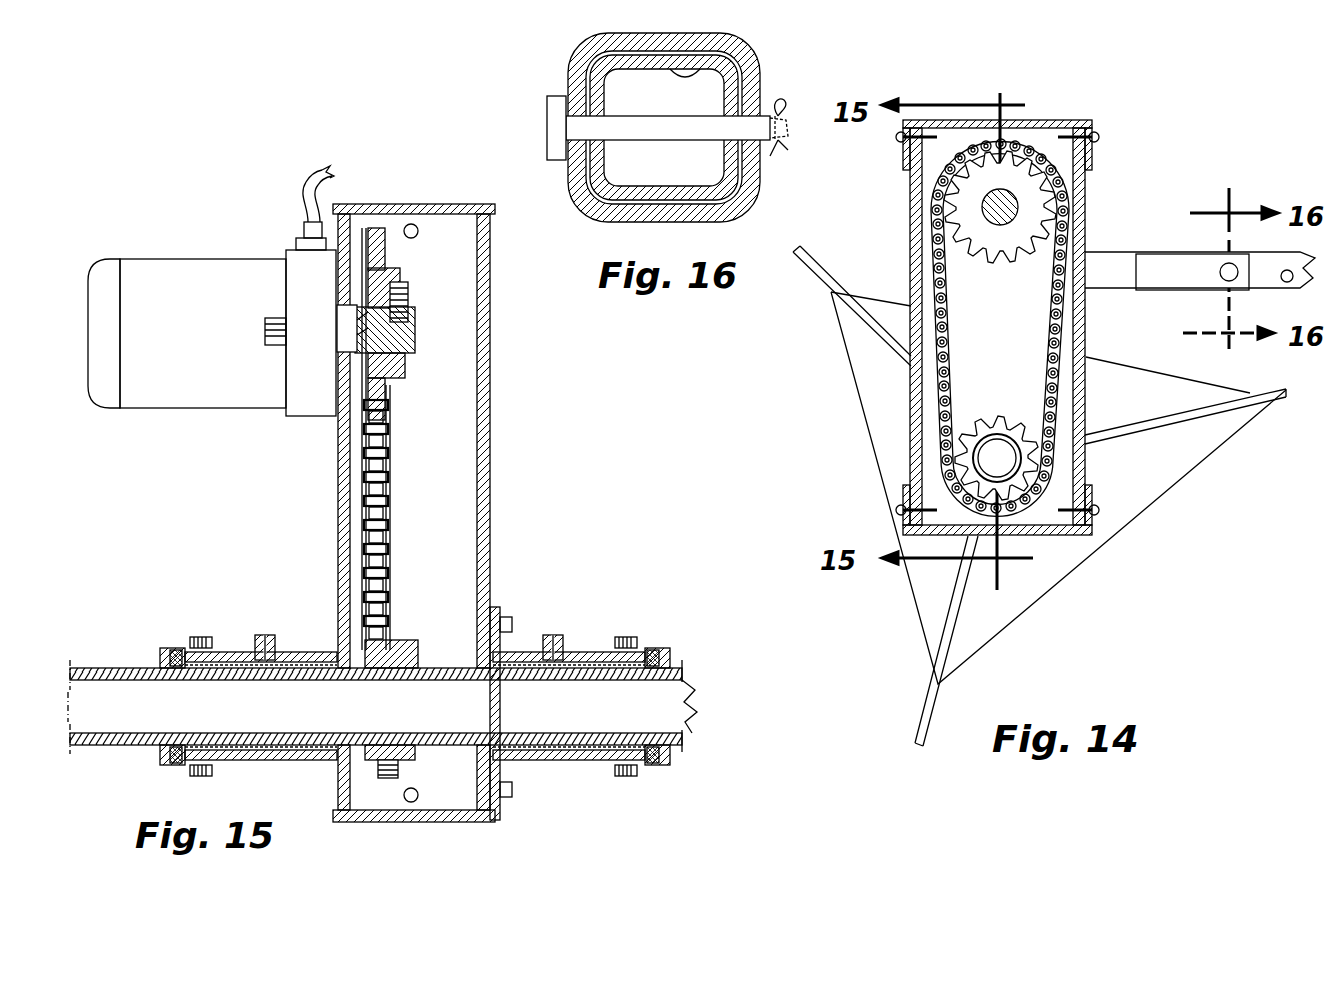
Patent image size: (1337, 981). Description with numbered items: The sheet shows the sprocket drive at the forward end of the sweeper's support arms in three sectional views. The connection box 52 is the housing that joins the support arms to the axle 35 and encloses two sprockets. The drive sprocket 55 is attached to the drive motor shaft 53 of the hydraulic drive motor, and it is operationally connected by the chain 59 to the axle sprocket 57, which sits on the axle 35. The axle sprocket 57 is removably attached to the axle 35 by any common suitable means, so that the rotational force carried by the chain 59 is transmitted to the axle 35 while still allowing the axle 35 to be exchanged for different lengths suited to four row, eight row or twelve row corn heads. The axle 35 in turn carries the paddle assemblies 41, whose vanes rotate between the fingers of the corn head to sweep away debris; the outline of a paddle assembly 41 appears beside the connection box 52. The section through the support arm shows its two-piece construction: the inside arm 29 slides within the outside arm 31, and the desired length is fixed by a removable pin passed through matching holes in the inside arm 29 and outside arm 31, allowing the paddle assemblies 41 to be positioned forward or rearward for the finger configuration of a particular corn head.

In FIG. 16, the inside arm 29 is at (705, 68).
In FIG. 16, the outside arm 31 is at (566, 71).
In FIG. 15, the axle 35 is at (682, 660).
In FIG. 14, the paddle assembly 41 is at (1152, 490).
In FIG. 15, the connection box 52 is at (492, 498).
In FIG. 14, the connection box 52 is at (912, 238).
In FIG. 15, the drive motor shaft 53 is at (208, 258).
In FIG. 15, the drive sprocket 55 is at (397, 380).
In FIG. 14, the drive sprocket 55 is at (1037, 203).
In FIG. 15, the axle sprocket 57 is at (410, 652).
In FIG. 14, the axle sprocket 57 is at (978, 440).
In FIG. 15, the chain 59 is at (362, 484).
In FIG. 14, the chain 59 is at (955, 306).